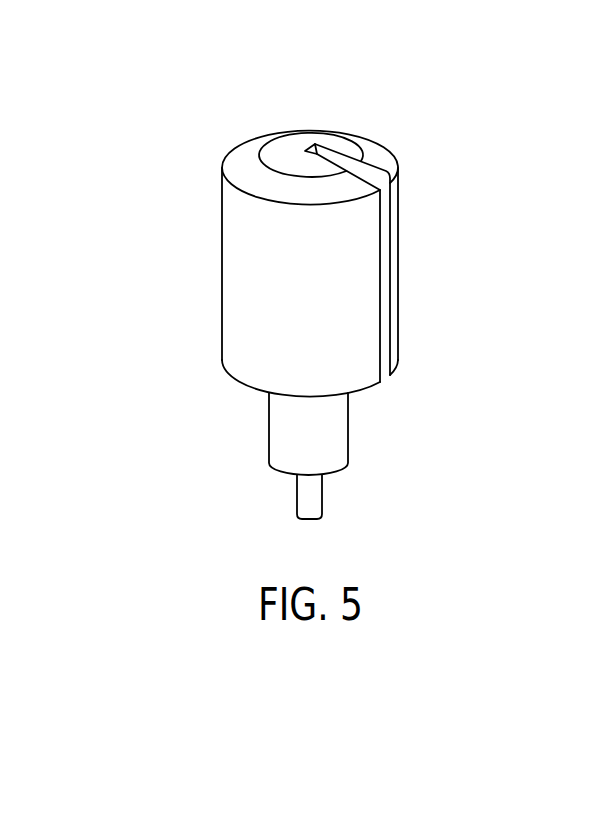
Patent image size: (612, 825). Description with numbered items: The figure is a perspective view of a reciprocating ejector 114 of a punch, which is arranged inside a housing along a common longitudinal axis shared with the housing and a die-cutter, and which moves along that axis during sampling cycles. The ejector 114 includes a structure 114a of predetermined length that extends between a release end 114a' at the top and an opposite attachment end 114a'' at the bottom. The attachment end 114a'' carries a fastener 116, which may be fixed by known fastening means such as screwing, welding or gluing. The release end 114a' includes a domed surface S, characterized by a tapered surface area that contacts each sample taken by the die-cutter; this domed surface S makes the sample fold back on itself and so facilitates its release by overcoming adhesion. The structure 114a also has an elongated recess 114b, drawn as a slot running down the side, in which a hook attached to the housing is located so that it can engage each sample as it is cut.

The reciprocating ejector 114 is at (160, 175).
The structure 114a is at (301, 205).
The release end 114a' is at (292, 109).
The attachment end 114a'' is at (228, 434).
The elongated recess 114b is at (385, 188).
The domed surface S is at (290, 148).
The fastener 116 is at (317, 495).